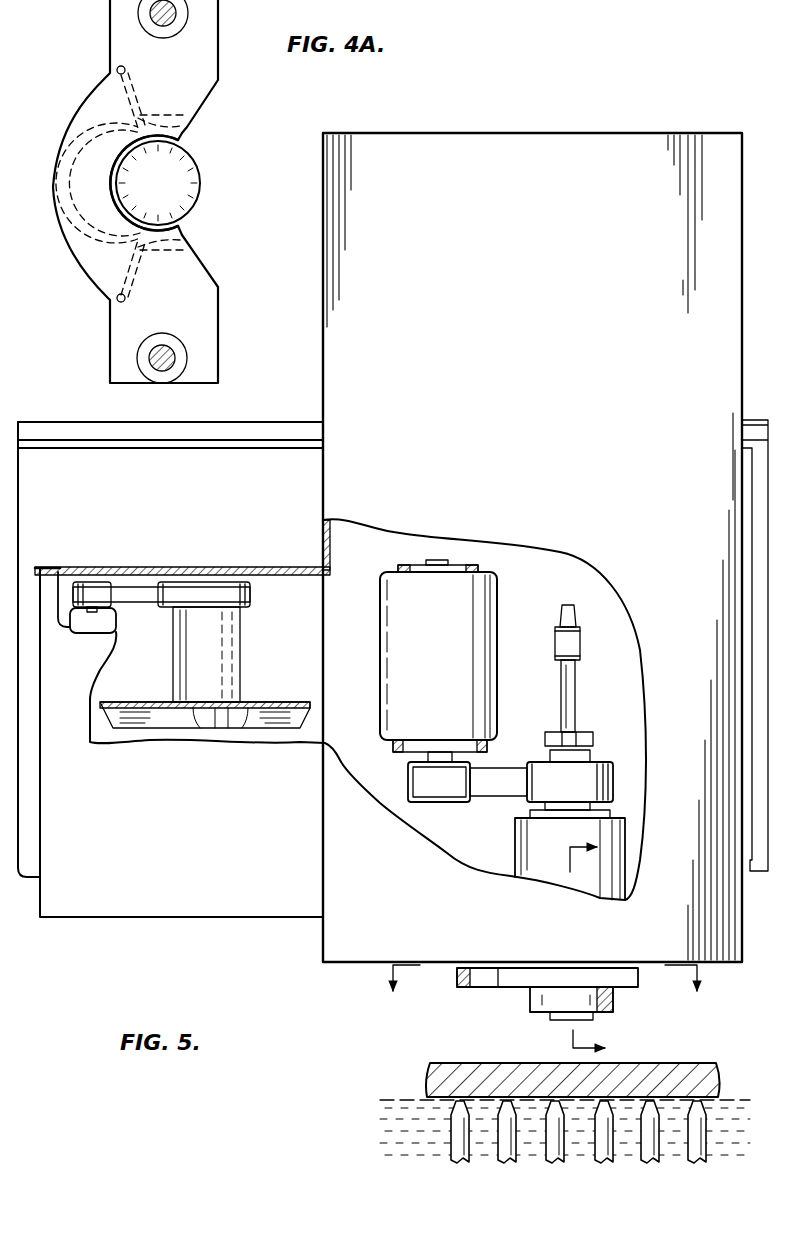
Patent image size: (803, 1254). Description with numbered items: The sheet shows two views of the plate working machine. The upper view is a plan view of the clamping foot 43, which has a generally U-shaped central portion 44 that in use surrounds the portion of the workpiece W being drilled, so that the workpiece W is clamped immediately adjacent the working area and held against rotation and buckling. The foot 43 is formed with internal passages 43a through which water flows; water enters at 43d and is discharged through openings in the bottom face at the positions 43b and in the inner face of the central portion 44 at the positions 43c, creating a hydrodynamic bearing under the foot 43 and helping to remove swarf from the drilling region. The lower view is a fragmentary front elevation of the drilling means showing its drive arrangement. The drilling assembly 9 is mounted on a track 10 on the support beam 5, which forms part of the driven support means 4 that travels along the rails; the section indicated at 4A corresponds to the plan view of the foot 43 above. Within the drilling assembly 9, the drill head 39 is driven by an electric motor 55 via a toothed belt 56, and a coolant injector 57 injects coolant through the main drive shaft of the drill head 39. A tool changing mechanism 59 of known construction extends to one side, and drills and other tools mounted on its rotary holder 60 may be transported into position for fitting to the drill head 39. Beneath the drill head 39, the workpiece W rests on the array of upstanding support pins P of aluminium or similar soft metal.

In FIG. 5, the section line 4A- 4A is at (547, 1001).
In FIG. 5, the driven support means 4 is at (592, 935).
In FIG. 5, the support beam 5 is at (163, 496).
In FIG. 5, the drilling assembly 9 is at (429, 547).
In FIG. 5, the track 10 is at (105, 435).
In FIG. 4A, the drill head 39 is at (178, 183).
In FIG. 5, the drill head 39 is at (557, 989).
In FIG. 4A, the clamping foot 43 is at (130, 42).
In FIG. 5, the clamping foot 43 is at (476, 980).
In FIG. 4A, the internal passages 43a is at (85, 207).
In FIG. 4A, the openings positions in bottom face 43b is at (200, 108).
In FIG. 4A, the openings positions in inner face 43c is at (88, 122).
In FIG. 4A, the water entry 43d is at (117, 70).
In FIG. 4A, the U-shaped central portion 44 is at (188, 142).
In FIG. 5, the electric motor 55 is at (438, 661).
In FIG. 5, the toothed belt 56 is at (598, 782).
In FIG. 5, the coolant injector 57 is at (568, 645).
In FIG. 5, the tool changing mechanism 59 is at (243, 665).
In FIG. 5, the rotary holder 60 is at (265, 710).
In FIG. 5, the workpiece W is at (430, 1065).
In FIG. 5, the support pins P is at (455, 1120).